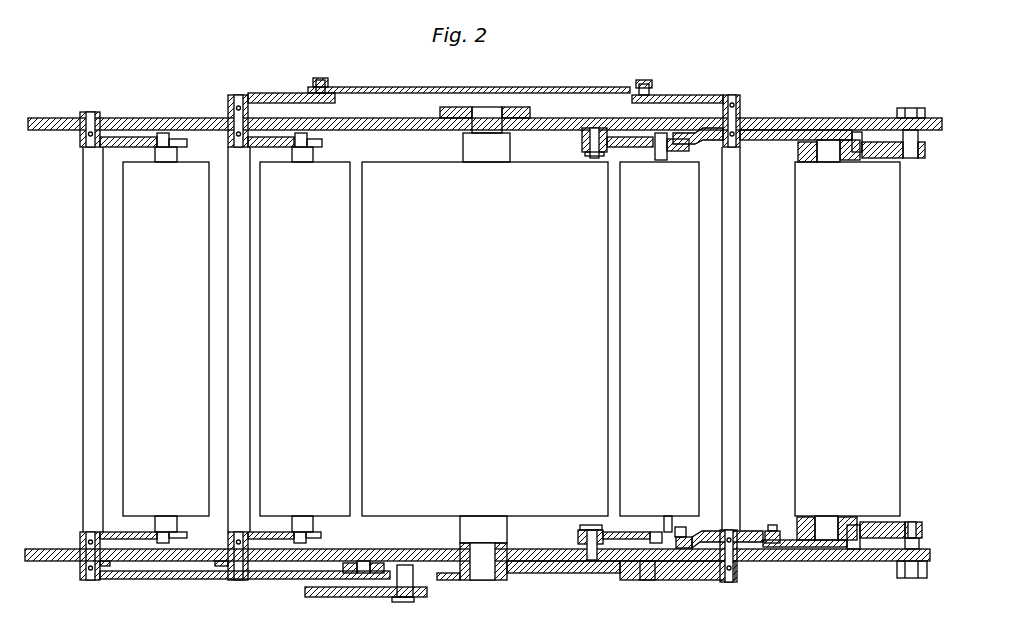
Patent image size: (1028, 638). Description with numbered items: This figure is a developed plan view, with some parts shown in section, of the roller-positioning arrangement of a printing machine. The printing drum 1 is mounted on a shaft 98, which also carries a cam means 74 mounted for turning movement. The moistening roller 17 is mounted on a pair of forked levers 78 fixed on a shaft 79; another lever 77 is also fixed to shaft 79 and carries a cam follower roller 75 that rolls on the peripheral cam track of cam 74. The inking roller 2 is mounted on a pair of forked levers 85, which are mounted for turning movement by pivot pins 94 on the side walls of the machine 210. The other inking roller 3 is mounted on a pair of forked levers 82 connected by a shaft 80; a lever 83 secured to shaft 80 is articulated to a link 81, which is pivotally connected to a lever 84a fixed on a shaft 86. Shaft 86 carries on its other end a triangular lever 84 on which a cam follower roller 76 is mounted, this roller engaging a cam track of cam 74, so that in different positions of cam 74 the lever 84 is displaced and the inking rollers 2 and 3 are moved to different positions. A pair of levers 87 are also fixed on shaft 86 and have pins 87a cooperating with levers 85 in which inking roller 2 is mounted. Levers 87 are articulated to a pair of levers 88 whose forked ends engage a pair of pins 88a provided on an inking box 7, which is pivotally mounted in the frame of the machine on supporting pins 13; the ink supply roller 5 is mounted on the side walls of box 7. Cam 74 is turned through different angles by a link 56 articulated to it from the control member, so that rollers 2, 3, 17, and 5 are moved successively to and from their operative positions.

The printing drum 1 is at (525, 500).
The inking roller 2 is at (693, 505).
The inking roller 3 is at (330, 500).
The ink supply roller 5 is at (843, 505).
The inking box 7 is at (889, 536).
The supporting pins 13 is at (921, 529).
The moistening roller 17 is at (192, 500).
The link 56 is at (350, 598).
The cam means 74 is at (555, 566).
The cam follower roller 75 is at (378, 562).
The cam follower roller 76 is at (633, 582).
The lever 77 is at (268, 562).
The forked levers 78 is at (127, 140).
The shaft 79 is at (90, 580).
The shaft 80 is at (236, 556).
The link 81 is at (605, 90).
The forked levers 82 is at (278, 140).
The lever 83 is at (297, 99).
The triangular lever 84 is at (664, 582).
The lever 84a is at (679, 96).
The forked levers 85 is at (622, 140).
The shaft 86 is at (727, 582).
The levers 87 is at (700, 128).
The pins 87a is at (680, 537).
The levers 88 is at (807, 128).
The pins 88a is at (858, 525).
The pivot pins 94 is at (594, 138).
The shaft 98 is at (483, 568).
The side walls of the machine 210 is at (862, 120).